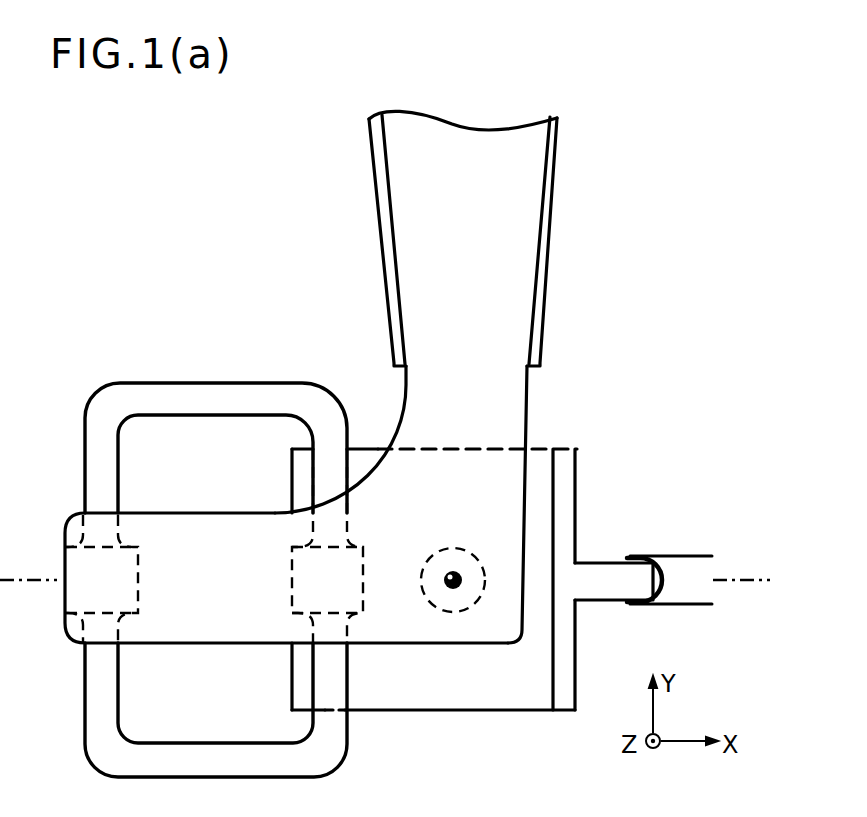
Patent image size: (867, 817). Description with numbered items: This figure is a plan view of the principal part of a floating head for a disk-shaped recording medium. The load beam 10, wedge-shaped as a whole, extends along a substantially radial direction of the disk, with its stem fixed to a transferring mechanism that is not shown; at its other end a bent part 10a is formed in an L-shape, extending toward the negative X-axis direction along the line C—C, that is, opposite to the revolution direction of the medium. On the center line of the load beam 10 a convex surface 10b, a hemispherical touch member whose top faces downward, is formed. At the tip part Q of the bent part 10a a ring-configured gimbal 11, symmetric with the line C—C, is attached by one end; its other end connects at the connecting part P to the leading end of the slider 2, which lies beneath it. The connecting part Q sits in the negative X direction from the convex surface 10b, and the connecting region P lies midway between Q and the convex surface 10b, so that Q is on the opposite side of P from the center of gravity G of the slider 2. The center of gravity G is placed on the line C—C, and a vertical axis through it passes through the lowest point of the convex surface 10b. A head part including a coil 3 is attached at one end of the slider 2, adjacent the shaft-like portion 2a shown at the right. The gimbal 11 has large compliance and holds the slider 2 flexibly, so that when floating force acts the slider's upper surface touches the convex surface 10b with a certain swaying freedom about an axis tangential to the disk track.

The load beam 10 is at (524, 223).
The bent part 10a is at (188, 530).
The convex surface 10b is at (453, 613).
The gimbal 11 is at (253, 393).
The slider 2 is at (540, 483).
The shaft 2a is at (633, 583).
The coil 3 is at (628, 556).
The connecting part P is at (363, 602).
The connecting part Q is at (70, 570).
The center of gravity G is at (458, 582).
The line C— C is at (400, 581).